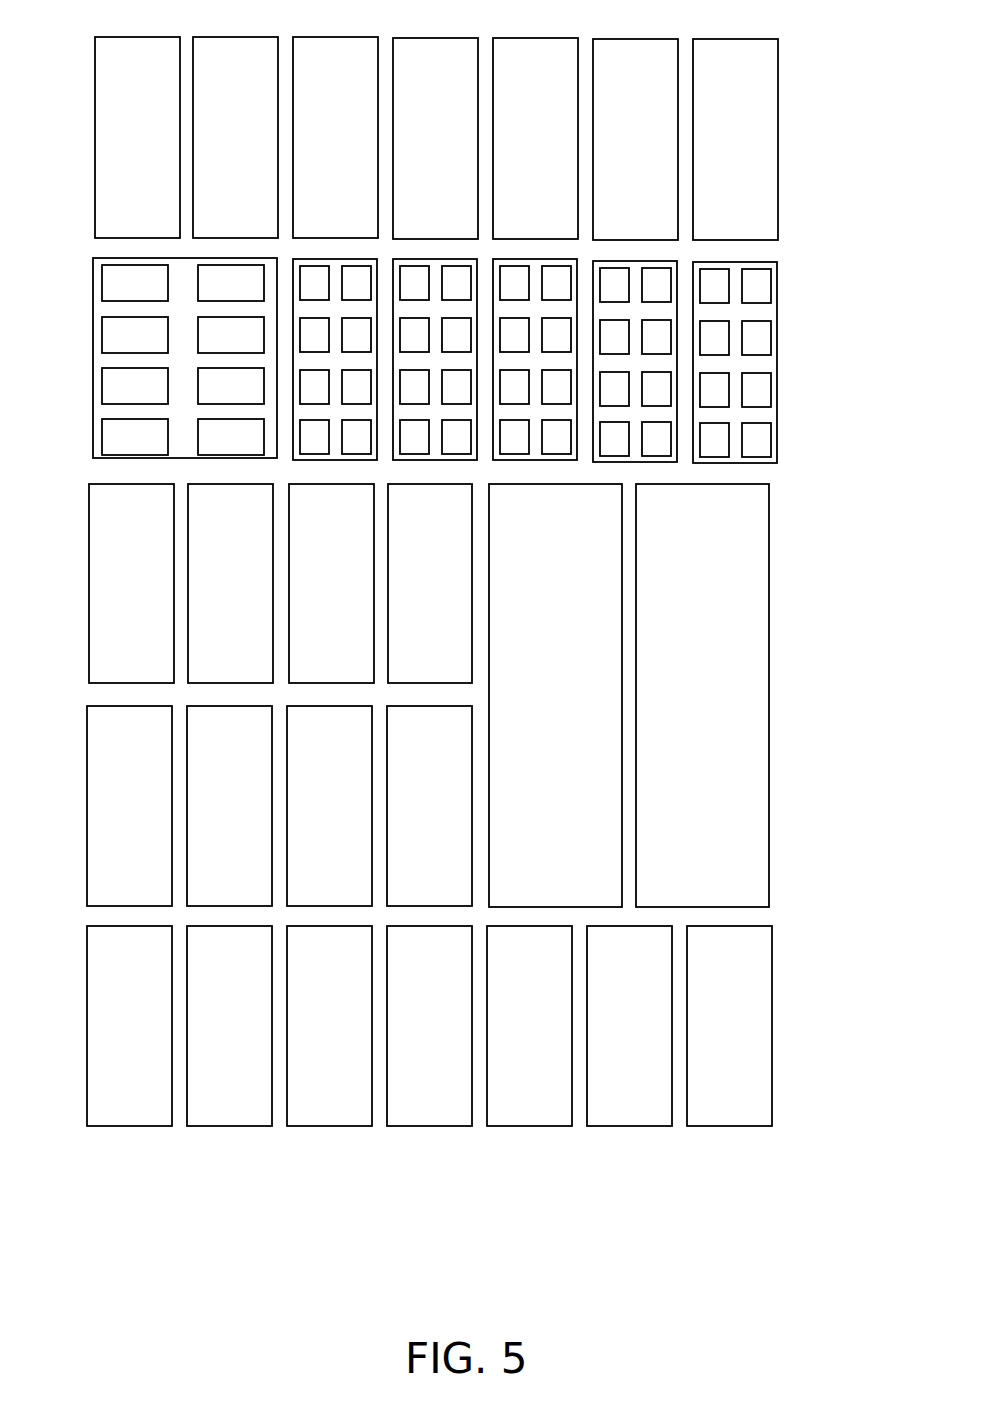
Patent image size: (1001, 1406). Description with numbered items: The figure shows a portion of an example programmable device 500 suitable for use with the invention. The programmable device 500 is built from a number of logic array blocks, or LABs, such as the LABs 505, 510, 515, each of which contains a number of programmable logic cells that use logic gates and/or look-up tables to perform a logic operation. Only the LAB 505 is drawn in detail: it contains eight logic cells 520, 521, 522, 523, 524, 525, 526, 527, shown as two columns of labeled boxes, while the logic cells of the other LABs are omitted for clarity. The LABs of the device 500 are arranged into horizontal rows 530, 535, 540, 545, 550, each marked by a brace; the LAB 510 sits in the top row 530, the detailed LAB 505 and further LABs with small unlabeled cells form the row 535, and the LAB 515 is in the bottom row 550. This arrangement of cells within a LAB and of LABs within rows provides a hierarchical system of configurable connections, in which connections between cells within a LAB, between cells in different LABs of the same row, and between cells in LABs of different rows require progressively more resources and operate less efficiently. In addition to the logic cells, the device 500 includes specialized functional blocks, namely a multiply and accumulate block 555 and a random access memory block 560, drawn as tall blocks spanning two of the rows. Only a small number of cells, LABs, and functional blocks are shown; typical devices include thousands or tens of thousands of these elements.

The programmable device 500 is at (440, 625).
The logic array block 505 is at (149, 358).
The logic array block 510 is at (137, 137).
The logic array block 515 is at (740, 1098).
The logic cell 520 is at (135, 437).
The logic cell 521 is at (231, 437).
The logic cell 522 is at (135, 386).
The logic cell 523 is at (231, 386).
The logic cell 524 is at (135, 335).
The logic cell 525 is at (231, 335).
The logic cell 526 is at (231, 283).
The logic cell 527 is at (135, 283).
The row 530 is at (486, 135).
The row 535 is at (448, 365).
The row 540 is at (105, 472).
The row 545 is at (105, 701).
The row 550 is at (387, 1061).
The multiply and accumulate block 555 is at (555, 695).
The random access memory block 560 is at (702, 695).